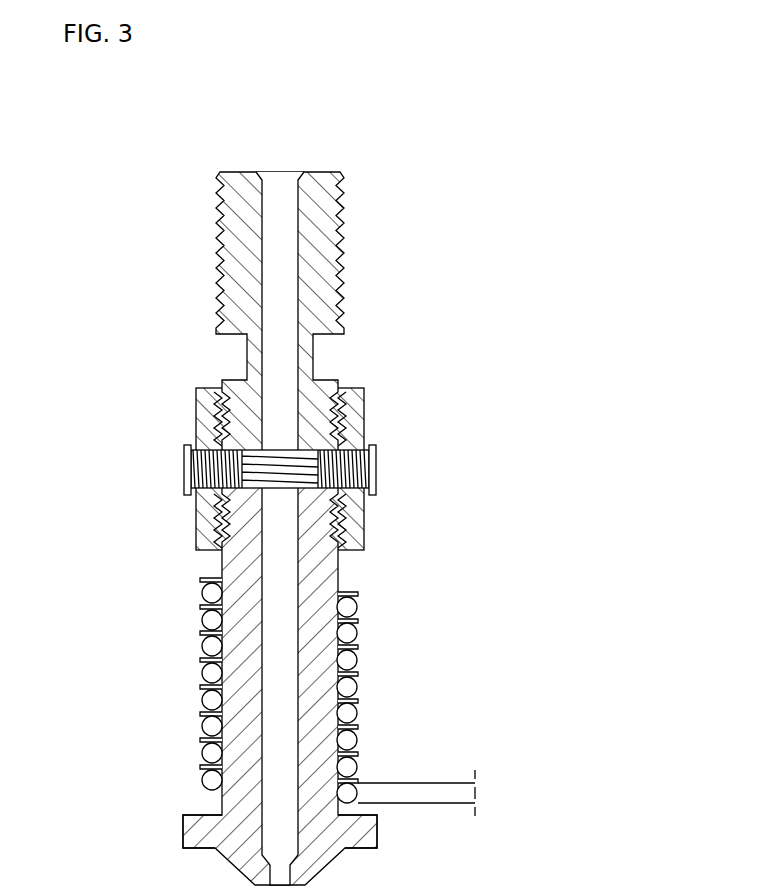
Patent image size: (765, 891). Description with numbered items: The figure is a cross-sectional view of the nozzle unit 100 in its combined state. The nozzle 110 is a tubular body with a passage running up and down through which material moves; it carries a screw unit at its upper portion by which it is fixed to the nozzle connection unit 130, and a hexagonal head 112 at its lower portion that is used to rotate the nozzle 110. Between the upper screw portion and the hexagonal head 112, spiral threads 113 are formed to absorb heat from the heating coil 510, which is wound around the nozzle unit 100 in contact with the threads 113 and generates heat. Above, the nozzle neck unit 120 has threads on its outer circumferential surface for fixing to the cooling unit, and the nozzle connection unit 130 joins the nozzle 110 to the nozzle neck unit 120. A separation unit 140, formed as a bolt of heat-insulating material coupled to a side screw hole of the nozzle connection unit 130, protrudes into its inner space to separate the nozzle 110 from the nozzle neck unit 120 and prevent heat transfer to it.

The nozzle unit 100 is at (303, 113).
The nozzle 110 is at (243, 727).
The hexagonal head 112 is at (200, 833).
The threads 113 is at (207, 627).
The nozzle neck unit 120 is at (230, 268).
The nozzle connection unit 130 is at (205, 405).
The separation unit 140 is at (186, 467).
The heating coil 510 is at (212, 697).